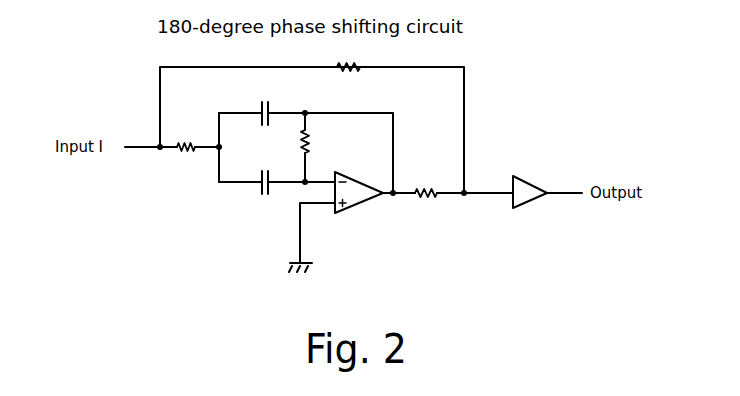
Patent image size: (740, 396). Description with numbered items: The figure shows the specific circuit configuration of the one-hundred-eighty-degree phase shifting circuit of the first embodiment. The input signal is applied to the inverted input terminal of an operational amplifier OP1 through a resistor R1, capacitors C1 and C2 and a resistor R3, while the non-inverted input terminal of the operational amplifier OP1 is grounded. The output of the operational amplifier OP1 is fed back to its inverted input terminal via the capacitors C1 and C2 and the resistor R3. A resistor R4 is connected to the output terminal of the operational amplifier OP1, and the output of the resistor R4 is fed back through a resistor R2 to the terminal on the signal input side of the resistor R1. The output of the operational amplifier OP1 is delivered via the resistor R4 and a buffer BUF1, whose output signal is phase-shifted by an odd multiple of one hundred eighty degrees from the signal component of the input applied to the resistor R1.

The resistor R1 is at (185, 164).
The resistor R2 is at (352, 79).
The resistor R3 is at (324, 141).
The resistor R4 is at (425, 205).
The capacitor C1 is at (260, 100).
The capacitor C2 is at (260, 196).
The operational amplifier OP1 is at (359, 207).
The buffer BUF1 is at (524, 212).